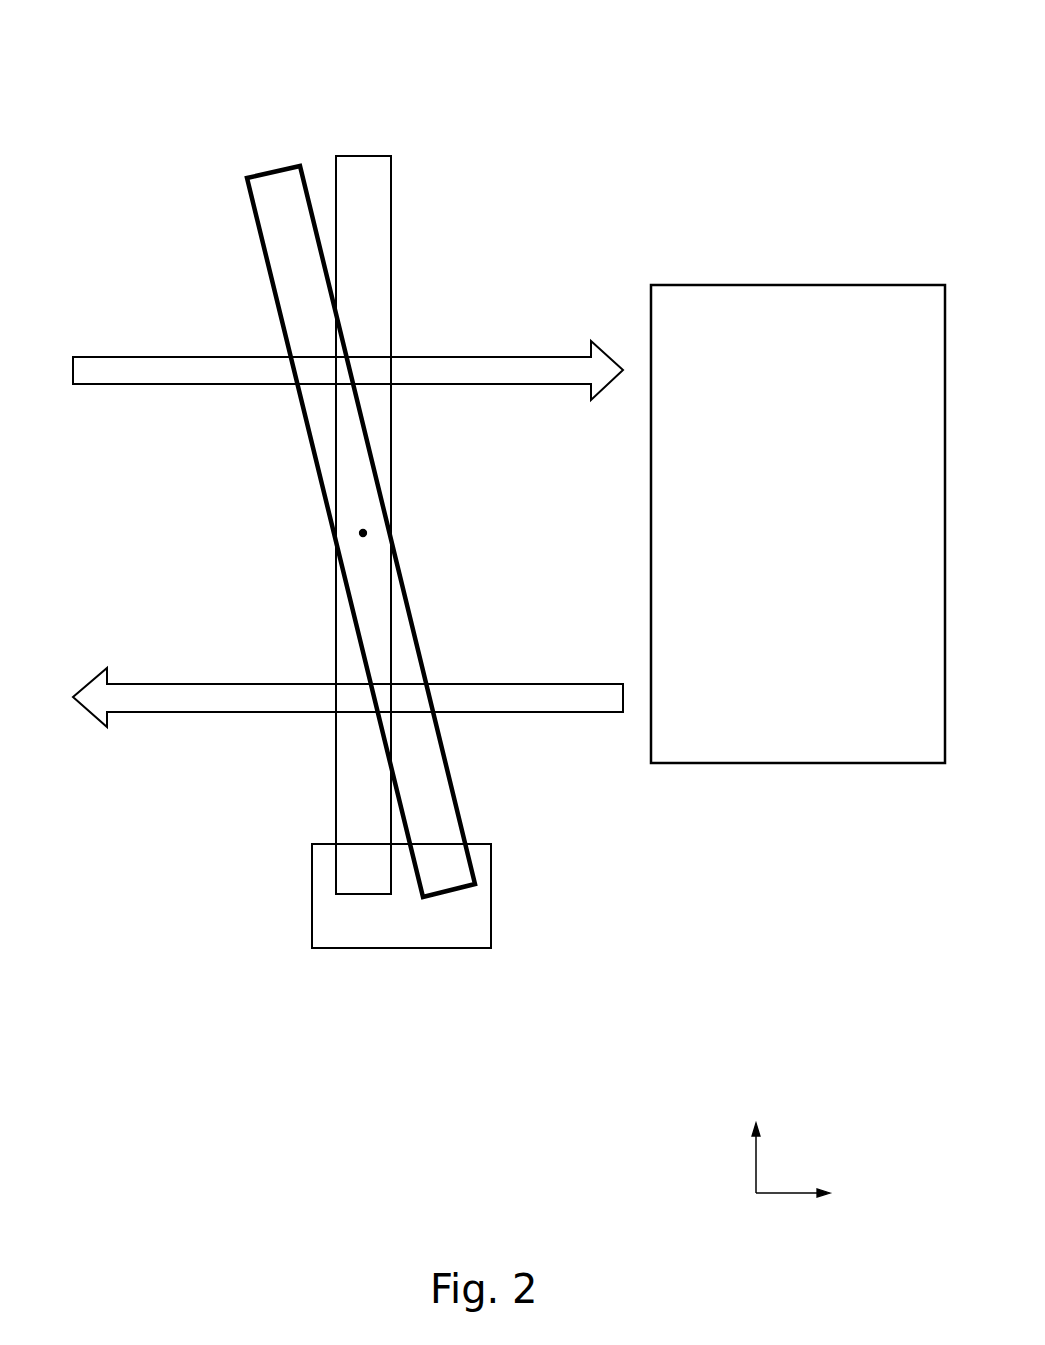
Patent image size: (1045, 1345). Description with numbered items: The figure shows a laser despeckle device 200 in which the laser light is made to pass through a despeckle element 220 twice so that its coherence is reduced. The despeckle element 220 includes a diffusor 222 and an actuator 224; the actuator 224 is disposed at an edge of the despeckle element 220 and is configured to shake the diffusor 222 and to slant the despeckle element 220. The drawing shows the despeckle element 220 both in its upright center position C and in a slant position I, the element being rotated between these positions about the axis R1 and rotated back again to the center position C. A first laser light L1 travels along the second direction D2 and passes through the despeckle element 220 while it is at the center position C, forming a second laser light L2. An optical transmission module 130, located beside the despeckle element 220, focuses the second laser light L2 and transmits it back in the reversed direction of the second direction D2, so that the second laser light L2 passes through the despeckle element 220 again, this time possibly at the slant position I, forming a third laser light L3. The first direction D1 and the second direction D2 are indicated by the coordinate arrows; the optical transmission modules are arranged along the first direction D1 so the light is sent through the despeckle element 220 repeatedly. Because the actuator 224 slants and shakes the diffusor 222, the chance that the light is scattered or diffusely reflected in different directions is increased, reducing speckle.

The laser despeckle device 200 is at (78, 33).
The optical transmission module 130 is at (803, 292).
The slant position I is at (270, 148).
The center position C is at (362, 551).
The despeckle element 220 is at (401, 962).
The diffusor 222 is at (359, 885).
The actuator 224 is at (433, 930).
The axis R1 is at (367, 533).
The first laser light L1 is at (106, 358).
The second laser light L2 is at (492, 358).
The third laser light L3 is at (168, 684).
The first direction D1 is at (756, 1140).
The second direction D2 is at (815, 1194).